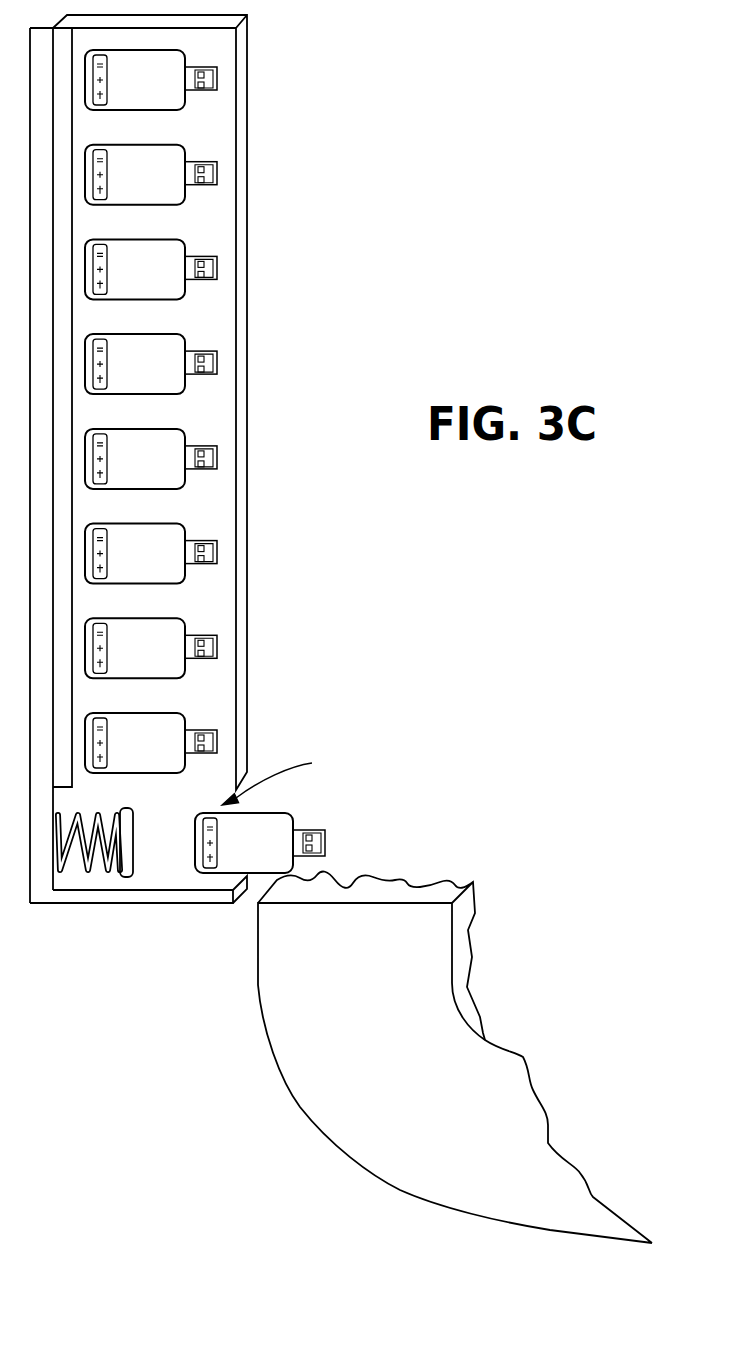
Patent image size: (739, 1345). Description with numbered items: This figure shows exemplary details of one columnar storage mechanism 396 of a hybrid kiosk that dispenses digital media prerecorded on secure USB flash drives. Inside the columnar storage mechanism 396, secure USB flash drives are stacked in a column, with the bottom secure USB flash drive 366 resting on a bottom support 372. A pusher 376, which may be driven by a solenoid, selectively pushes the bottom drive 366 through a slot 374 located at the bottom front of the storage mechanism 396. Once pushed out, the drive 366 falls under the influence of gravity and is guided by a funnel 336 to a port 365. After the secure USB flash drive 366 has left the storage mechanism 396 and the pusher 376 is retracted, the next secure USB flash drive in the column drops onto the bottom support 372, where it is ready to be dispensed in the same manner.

The columnar storage mechanism 396 is at (243, 212).
The bottom support 372 is at (127, 897).
The pusher 376 is at (134, 822).
The secure USB flash drive 366 is at (267, 830).
The slot 374 is at (291, 776).
The funnel 336 is at (370, 967).
The port 365 is at (563, 1209).